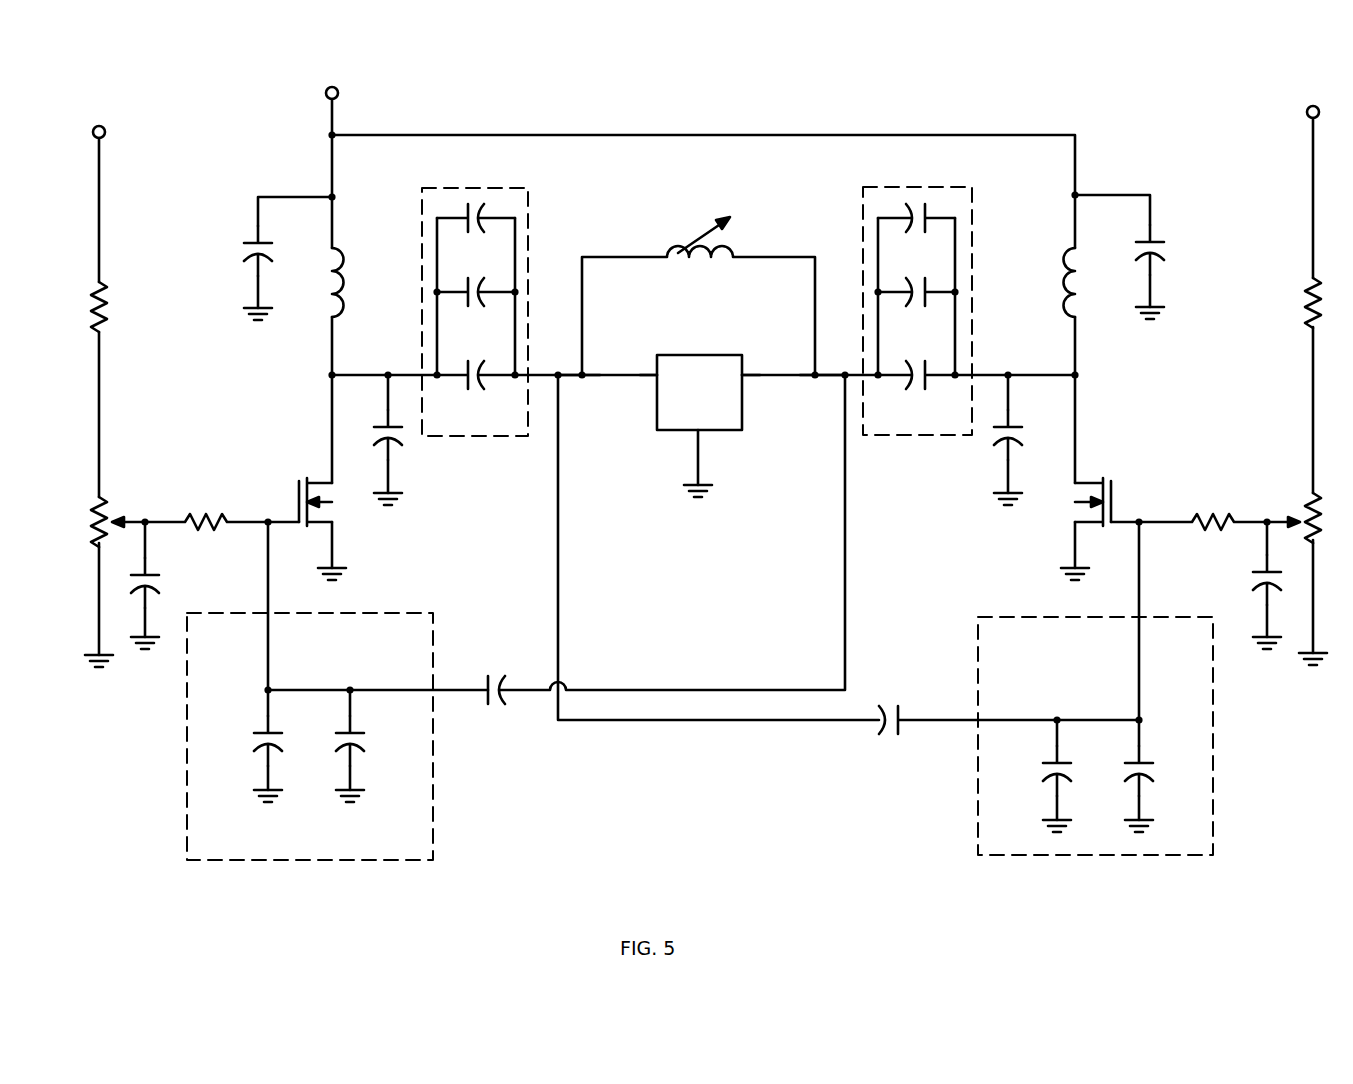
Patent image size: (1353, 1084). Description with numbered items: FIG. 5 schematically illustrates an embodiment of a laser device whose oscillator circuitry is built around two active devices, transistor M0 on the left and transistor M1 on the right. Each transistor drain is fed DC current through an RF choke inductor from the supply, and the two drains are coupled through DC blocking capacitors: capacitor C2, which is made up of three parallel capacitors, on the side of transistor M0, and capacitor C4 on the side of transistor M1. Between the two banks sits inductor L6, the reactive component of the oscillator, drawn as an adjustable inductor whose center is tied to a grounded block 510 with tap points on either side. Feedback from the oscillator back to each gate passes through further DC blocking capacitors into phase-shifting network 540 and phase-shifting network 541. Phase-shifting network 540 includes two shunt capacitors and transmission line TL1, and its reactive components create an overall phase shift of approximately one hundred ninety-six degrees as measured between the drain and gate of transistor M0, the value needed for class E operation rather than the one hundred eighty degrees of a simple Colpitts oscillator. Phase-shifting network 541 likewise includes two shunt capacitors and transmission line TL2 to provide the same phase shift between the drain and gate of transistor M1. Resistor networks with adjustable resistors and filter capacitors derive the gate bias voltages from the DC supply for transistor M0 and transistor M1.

The center-tap ground block of inductor L6 510 is at (679, 355).
The phase-shifting network 540 is at (433, 782).
The phase-shifting network 541 is at (978, 822).
The capacitor C2 is at (530, 208).
The capacitor C4 is at (972, 212).
The inductor L6 is at (698, 296).
The transistor M0 is at (317, 516).
The transistor M1 is at (1088, 516).
The transmission line TL1 is at (268, 650).
The transmission line TL2 is at (1139, 662).